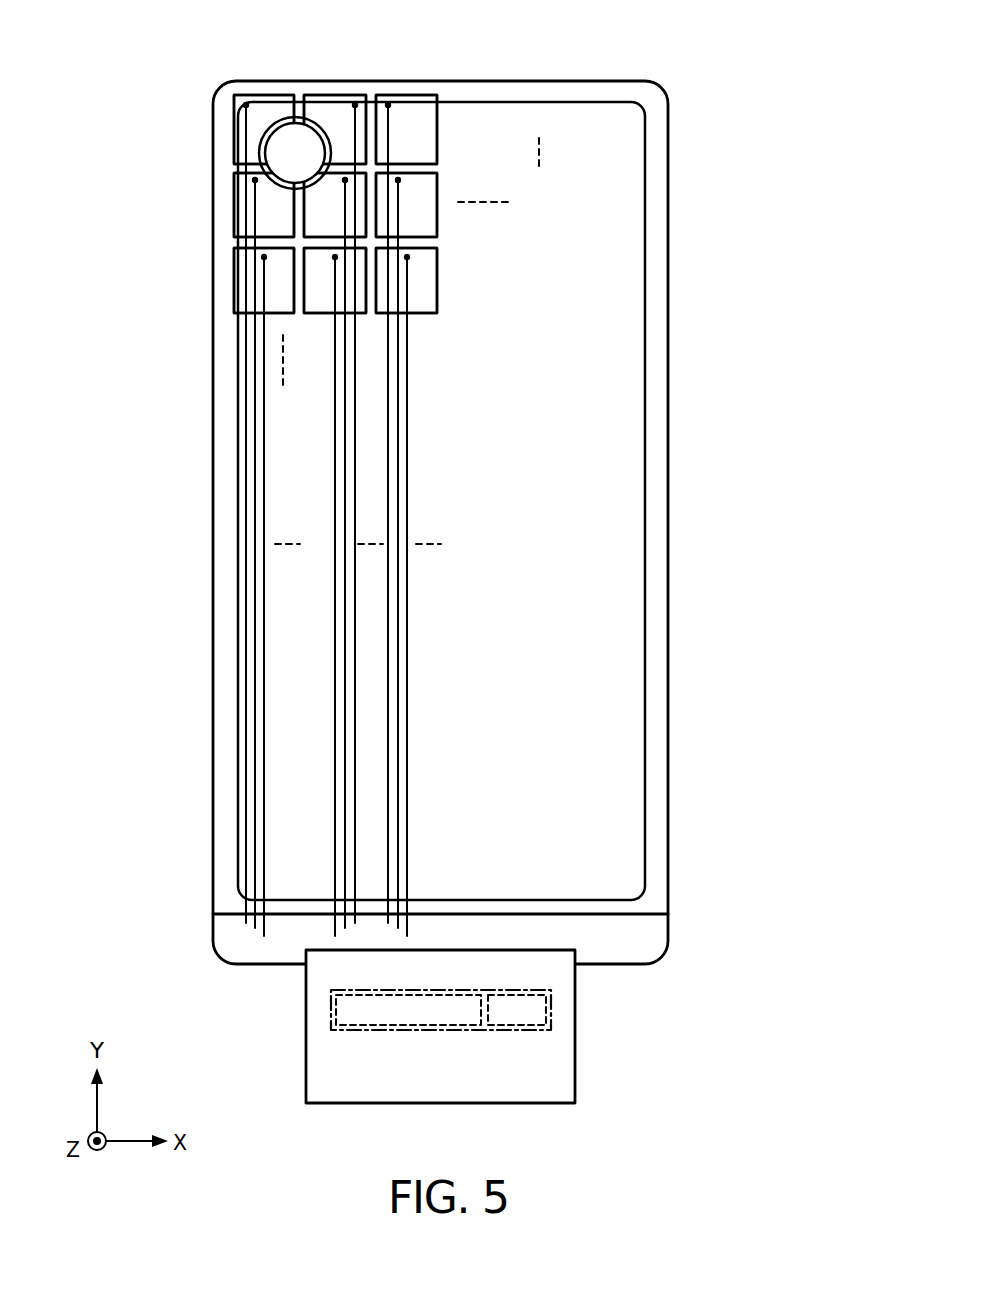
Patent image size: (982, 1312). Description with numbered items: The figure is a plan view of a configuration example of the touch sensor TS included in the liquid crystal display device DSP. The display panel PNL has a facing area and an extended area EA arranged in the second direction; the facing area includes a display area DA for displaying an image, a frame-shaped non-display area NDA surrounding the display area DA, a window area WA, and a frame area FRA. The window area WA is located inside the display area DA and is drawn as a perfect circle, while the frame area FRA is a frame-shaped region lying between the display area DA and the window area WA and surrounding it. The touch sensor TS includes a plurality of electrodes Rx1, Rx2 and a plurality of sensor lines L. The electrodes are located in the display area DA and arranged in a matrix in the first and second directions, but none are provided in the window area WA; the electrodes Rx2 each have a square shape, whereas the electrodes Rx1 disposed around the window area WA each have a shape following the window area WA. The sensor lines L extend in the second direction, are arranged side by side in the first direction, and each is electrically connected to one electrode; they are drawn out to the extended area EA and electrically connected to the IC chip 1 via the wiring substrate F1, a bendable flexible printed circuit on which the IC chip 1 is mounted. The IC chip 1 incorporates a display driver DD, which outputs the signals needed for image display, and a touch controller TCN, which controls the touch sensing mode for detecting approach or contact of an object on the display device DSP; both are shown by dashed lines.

The display device DSP is at (712, 90).
The display panel PNL is at (668, 480).
The display area DA is at (652, 313).
The non-display area NDA is at (668, 381).
The extended area EA is at (658, 940).
The touch sensor TS is at (458, 95).
The electrode Rx1 is at (235, 133).
The electrode Rx2 is at (235, 286).
The sensor line L is at (246, 495).
The window area WA is at (275, 117).
The frame area FRA is at (320, 110).
The wiring substrate F1 is at (575, 1073).
The IC chip 1 is at (551, 1009).
The display driver DD is at (408, 1010).
The touch controller TCN is at (517, 1010).